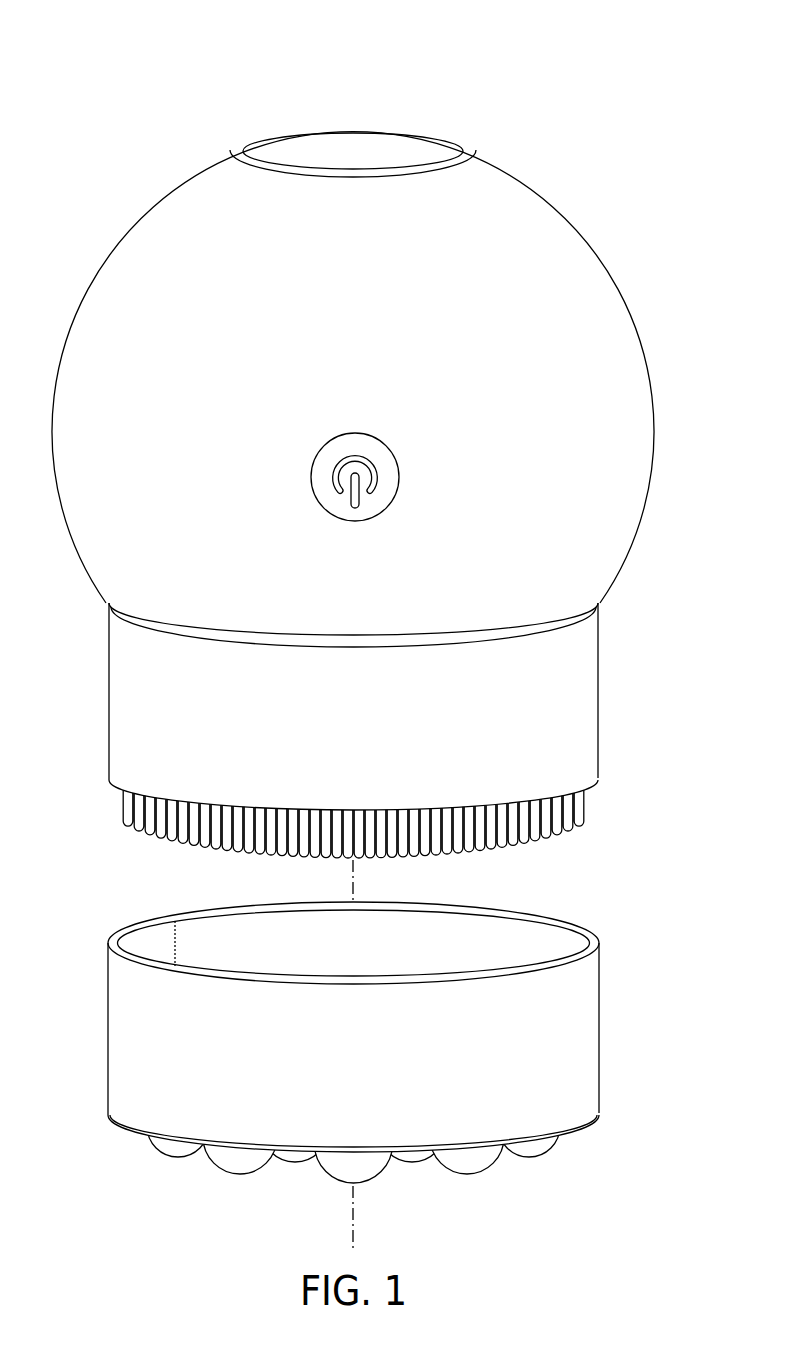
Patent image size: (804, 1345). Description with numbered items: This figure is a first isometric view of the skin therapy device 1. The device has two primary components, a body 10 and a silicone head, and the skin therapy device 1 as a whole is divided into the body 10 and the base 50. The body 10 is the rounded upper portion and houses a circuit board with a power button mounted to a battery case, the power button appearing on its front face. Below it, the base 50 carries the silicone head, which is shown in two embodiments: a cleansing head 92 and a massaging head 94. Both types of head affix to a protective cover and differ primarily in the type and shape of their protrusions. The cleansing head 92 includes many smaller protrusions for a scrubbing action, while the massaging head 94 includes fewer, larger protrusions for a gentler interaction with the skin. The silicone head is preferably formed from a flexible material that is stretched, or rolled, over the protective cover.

The skin therapy device 1 is at (598, 72).
The body 10 is at (670, 285).
The base 50 is at (646, 711).
The cleansing head 92 is at (150, 724).
The massaging head 94 is at (150, 1067).